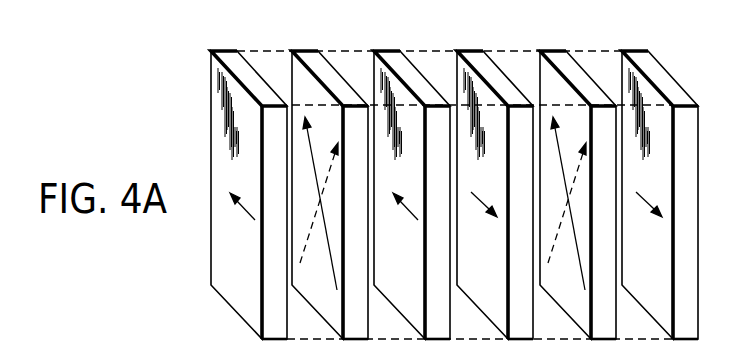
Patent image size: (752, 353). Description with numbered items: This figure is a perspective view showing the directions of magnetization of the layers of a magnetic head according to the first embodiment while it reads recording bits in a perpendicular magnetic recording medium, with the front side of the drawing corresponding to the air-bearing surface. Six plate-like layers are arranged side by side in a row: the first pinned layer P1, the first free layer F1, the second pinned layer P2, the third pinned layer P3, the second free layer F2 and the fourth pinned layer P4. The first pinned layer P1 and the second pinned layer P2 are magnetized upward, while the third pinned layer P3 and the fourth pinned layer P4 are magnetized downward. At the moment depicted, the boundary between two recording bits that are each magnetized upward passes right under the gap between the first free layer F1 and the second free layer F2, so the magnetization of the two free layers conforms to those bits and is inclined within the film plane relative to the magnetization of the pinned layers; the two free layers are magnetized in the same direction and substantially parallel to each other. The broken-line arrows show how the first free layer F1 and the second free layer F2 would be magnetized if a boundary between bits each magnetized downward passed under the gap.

The first pinned layer P1 is at (226, 54).
The first free layer F1 is at (307, 54).
The second pinned layer P2 is at (389, 54).
The third pinned layer P3 is at (472, 54).
The second free layer F2 is at (555, 54).
The fourth pinned layer P4 is at (637, 54).